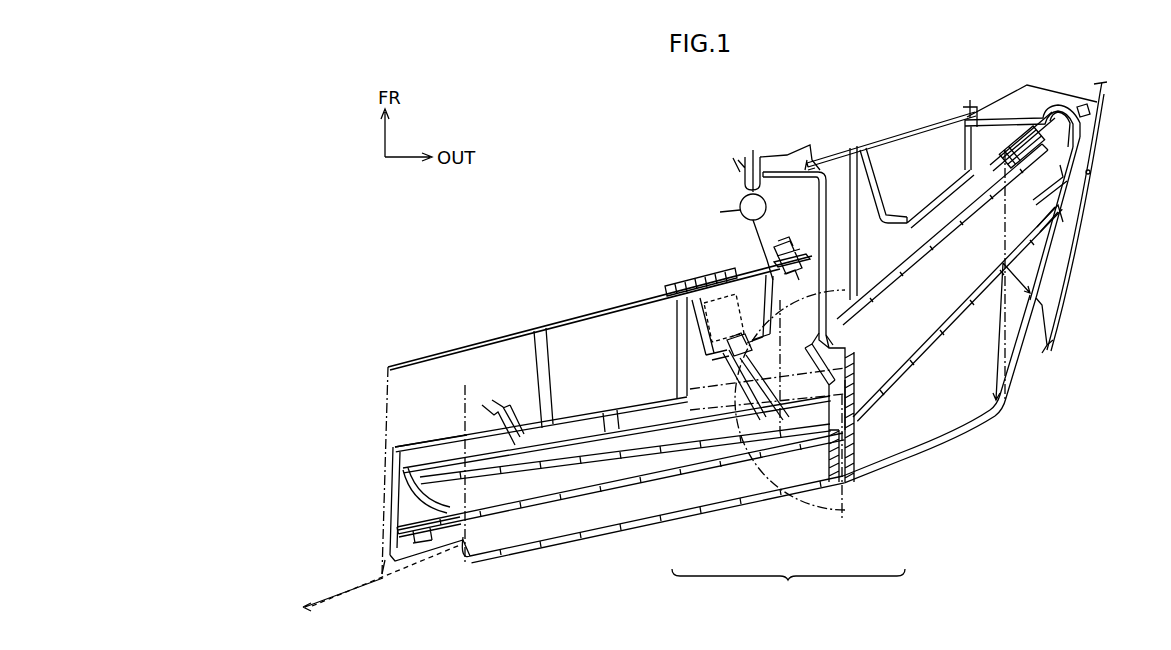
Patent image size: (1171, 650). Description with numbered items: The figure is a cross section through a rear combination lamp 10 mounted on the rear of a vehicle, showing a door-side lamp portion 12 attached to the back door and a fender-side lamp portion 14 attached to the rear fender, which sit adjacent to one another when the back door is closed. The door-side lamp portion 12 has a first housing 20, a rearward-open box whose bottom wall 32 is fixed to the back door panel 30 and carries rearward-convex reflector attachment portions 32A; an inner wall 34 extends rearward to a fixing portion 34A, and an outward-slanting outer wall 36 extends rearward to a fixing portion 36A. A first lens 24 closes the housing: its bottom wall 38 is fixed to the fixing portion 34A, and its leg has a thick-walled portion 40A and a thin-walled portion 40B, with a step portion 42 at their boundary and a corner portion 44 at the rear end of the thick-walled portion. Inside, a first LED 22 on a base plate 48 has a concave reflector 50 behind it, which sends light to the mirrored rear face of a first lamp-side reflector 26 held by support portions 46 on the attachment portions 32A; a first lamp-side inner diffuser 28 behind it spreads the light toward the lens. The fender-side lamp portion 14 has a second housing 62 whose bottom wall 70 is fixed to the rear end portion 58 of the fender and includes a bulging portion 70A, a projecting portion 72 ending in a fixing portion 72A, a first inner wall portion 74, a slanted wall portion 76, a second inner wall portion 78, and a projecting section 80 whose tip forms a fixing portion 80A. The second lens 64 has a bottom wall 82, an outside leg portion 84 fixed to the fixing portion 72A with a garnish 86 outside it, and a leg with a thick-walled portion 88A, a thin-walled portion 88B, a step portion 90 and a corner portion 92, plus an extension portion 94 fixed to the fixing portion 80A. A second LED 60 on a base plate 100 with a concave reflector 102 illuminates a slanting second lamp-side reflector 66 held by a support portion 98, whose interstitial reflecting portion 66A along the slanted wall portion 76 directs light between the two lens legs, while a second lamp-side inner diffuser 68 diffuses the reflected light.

The rear combination lamp 10 is at (788, 587).
The door-side lamp portion 12 is at (686, 522).
The fender-side lamp portion 14 is at (934, 492).
The first housing 20 is at (538, 340).
The first LED 22 is at (410, 482).
The first lens 24 is at (528, 556).
The first lamp-side reflector 26 is at (552, 468).
The first lamp-side inner diffuser 28 is at (676, 475).
The back door panel 30 is at (442, 357).
The bottom wall 32 is at (566, 325).
The reflector attachment portion 32A is at (757, 340).
The inner wall 34 is at (390, 464).
The fixing portion 34A is at (385, 560).
The outer wall 36 is at (775, 266).
The fixing portion 36A is at (820, 372).
The bottom wall 38 is at (610, 528).
The thick-walled portion 40A is at (823, 440).
The thin-walled portion 40B is at (733, 417).
The step portion 42 is at (827, 430).
The corner portion 44 is at (835, 484).
The support portion 46 is at (726, 378).
The base plate 48 is at (432, 470).
The concave reflector 50 is at (420, 505).
The rear end portion of rear fender 58 is at (975, 107).
The second LED 60 is at (1076, 130).
The second housing 62 is at (925, 137).
The second lens 64 is at (1000, 418).
The second lamp-side reflector 66 is at (940, 250).
The interstitial reflecting portion 66A is at (843, 322).
The second lamp-side inner diffuser 68 is at (963, 332).
The bottom wall 70 is at (1012, 105).
The bulging portion 70A is at (926, 200).
The projecting portion 72 is at (1040, 96).
The fixing portion 72A is at (1090, 108).
The first inner wall portion 74 is at (858, 240).
The slanted wall portion 76 is at (832, 300).
The second inner wall portion 78 is at (822, 172).
The projecting section 80 is at (799, 256).
The fixing portion 80A is at (812, 340).
The bottom wall 82 is at (985, 435).
The outside leg portion 84 is at (1052, 264).
The garnish 86 is at (1078, 236).
The thick-walled portion 88A is at (856, 482).
The thin-walled portion 88B is at (856, 380).
The step portion 90 is at (862, 410).
The corner portion 92 is at (850, 484).
The extension portion 94 is at (836, 344).
The support portion 98 is at (1005, 140).
The base plate 100 is at (913, 220).
The concave reflector 102 is at (1085, 178).